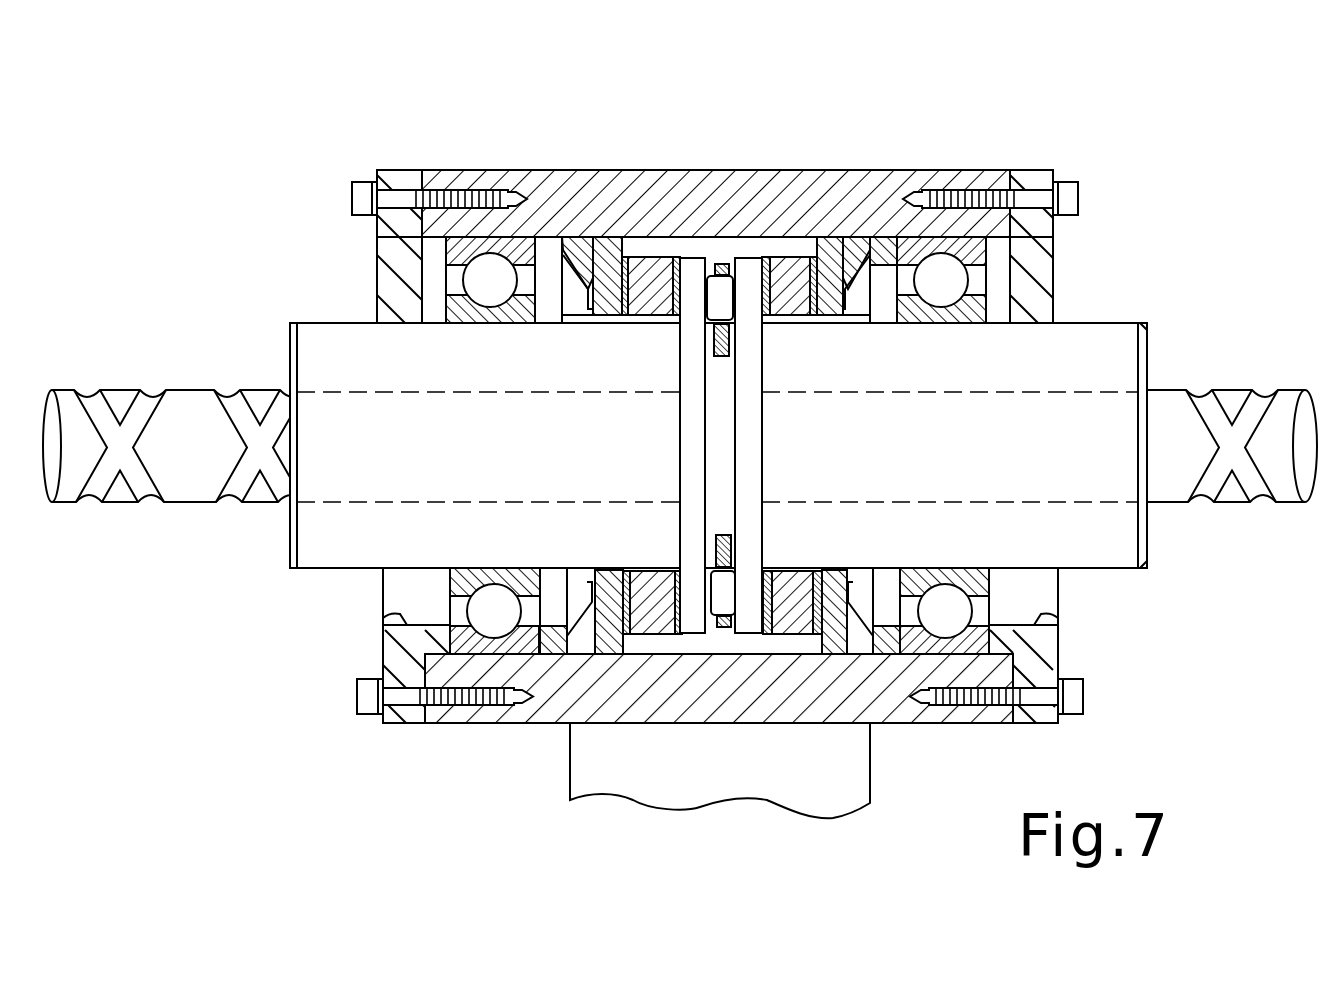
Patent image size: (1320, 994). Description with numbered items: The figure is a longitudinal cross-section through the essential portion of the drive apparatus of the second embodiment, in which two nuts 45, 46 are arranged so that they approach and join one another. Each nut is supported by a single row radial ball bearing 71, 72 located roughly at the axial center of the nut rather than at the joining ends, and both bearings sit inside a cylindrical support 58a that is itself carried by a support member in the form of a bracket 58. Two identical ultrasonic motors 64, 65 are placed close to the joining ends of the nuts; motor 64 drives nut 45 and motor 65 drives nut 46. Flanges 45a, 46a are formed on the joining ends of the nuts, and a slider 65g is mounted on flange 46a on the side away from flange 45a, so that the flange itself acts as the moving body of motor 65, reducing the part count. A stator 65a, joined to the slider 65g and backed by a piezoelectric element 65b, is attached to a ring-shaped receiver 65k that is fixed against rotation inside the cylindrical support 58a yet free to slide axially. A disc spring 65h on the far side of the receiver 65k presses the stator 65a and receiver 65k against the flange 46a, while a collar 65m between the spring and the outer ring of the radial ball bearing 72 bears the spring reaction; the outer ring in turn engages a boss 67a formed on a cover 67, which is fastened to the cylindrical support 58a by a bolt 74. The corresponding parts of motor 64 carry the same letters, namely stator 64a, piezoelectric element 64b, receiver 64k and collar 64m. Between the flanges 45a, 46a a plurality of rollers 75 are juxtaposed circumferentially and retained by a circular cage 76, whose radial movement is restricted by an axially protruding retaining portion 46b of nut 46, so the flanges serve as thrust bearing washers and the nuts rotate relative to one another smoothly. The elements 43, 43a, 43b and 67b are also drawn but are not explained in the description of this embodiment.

The ball screw shaft 43 is at (1262, 386).
The screw thread groove 43a is at (237, 413).
The screw thread groove 43b is at (230, 488).
The nut 45 is at (1158, 557).
The flange 45a is at (750, 266).
The nut 46 is at (285, 561).
The flange 46a is at (692, 258).
The retaining portion 46b is at (723, 457).
The bracket 58 is at (562, 762).
The cylindrical support 58a is at (908, 728).
The ultrasonic motor 64 is at (800, 258).
The stator 64a is at (832, 262).
The piezoelectric element 64b is at (815, 262).
The receiver 64k is at (858, 280).
The collar 64m is at (905, 262).
The ultrasonic motor 65 is at (661, 232).
The stator 65a is at (610, 250).
The piezoelectric element 65b is at (624, 260).
The slider 65g is at (676, 258).
The disc spring 65h is at (573, 278).
The receiver 65k is at (580, 255).
The collar 65m is at (548, 258).
The cover 67 is at (380, 233).
The boss 67a is at (432, 258).
The lower housing bracket 67b is at (386, 627).
The radial ball bearing 71 is at (936, 230).
The radial ball bearing 72 is at (512, 230).
The bolt 74 is at (352, 200).
The rollers 75 is at (721, 264).
The cage 76 is at (740, 262).